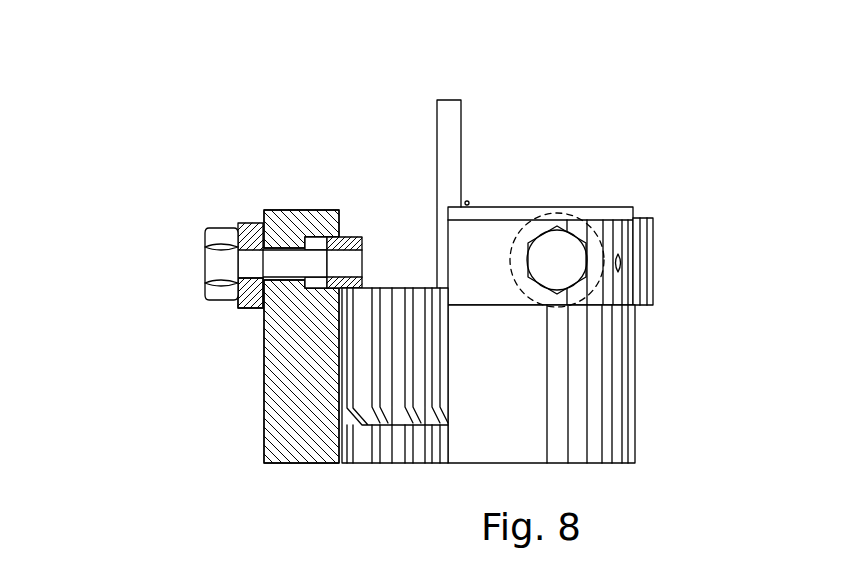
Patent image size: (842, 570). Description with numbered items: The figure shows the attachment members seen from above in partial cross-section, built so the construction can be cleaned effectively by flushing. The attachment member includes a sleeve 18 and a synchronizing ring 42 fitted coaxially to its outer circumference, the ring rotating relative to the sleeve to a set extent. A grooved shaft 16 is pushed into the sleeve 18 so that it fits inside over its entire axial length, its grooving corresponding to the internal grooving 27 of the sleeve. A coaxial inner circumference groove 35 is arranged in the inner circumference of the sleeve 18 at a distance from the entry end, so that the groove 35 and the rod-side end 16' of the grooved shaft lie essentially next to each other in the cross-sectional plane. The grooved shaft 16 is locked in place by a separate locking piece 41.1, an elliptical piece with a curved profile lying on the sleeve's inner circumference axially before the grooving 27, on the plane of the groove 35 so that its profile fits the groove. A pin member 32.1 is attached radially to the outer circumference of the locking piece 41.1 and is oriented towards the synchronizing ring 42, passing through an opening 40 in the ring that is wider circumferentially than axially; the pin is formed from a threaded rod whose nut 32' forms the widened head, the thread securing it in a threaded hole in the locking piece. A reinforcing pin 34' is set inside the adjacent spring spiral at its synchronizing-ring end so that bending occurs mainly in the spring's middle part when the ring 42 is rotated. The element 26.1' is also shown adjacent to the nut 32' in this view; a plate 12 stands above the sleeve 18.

The plate 12 is at (458, 165).
The grooved shaft 16 is at (275, 374).
The rod-side end of the grooved shaft 16' is at (302, 360).
The sleeve 18 is at (302, 433).
The washer 26.1' is at (182, 314).
The internal grooving of the sleeve 27 is at (410, 450).
The nut 32' is at (365, 219).
The pin member 32.1 is at (250, 262).
The reinforcing pin 34' is at (675, 215).
The inner circumference groove 35 is at (318, 290).
The opening 40 is at (510, 250).
The locking piece 41.1 is at (310, 210).
The synchronizing ring 42 is at (251, 224).